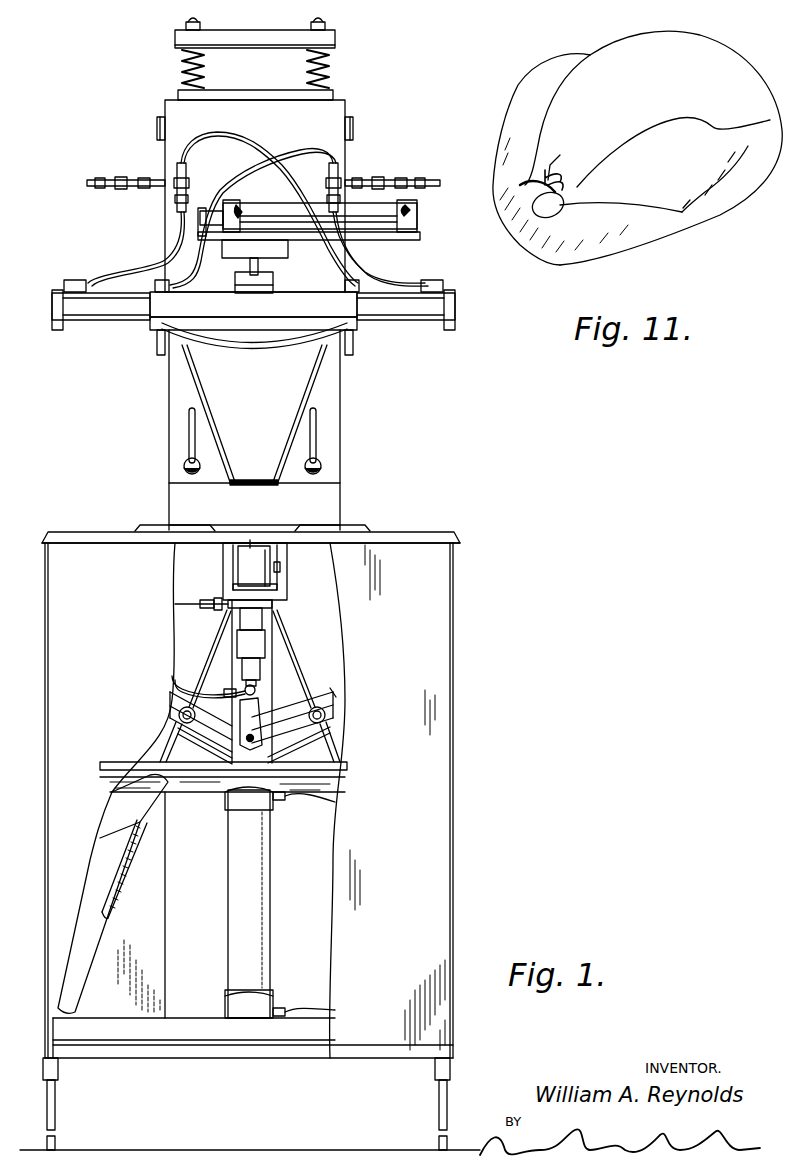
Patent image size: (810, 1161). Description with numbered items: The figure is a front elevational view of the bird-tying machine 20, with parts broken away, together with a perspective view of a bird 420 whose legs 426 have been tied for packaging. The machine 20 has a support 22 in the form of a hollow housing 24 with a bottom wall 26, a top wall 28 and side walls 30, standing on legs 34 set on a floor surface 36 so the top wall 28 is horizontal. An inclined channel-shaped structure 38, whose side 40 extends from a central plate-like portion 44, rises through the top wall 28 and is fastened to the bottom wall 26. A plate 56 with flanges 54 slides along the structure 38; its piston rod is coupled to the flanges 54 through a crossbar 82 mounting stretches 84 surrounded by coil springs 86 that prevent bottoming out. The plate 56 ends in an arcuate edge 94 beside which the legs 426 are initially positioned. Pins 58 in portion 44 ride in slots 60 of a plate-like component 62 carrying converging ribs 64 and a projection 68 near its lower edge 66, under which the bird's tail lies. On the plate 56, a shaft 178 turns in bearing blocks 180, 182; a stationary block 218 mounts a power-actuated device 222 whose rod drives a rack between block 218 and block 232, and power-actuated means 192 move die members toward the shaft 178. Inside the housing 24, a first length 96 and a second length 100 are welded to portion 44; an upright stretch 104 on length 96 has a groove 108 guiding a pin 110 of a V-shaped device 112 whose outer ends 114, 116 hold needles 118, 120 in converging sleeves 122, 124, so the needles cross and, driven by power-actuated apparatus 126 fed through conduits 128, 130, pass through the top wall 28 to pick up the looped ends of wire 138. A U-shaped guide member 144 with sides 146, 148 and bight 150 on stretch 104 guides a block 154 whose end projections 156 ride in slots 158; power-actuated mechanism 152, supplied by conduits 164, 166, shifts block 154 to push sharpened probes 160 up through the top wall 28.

In FIG. 1, the machine 20 is at (471, 557).
In FIG. 1, the support 22 is at (455, 822).
In FIG. 1, the hollow housing 24 is at (444, 722).
In FIG. 1, the bottom wall 26 is at (232, 1058).
In FIG. 1, the top wall 28 is at (428, 532).
In FIG. 1, the side walls 30 is at (455, 760).
In FIG. 1, the legs 34 is at (57, 1105).
In FIG. 1, the surface 36 is at (150, 1150).
In FIG. 1, the channel-shaped structure 38 is at (343, 492).
In FIG. 1, the side 40 is at (336, 94).
In FIG. 1, the central plate-like portion 44 is at (320, 520).
In FIG. 1, the flanges 54 is at (346, 108).
In FIG. 1, the elongated plate 56 is at (340, 150).
In FIG. 1, the pins 58 is at (182, 466).
In FIG. 1, the elongated slots 60 is at (186, 422).
In FIG. 1, the plate-like component 62 is at (341, 393).
In FIG. 1, the ribs 64 is at (200, 376).
In FIG. 1, the lower edge 66 is at (285, 483).
In FIG. 1, the projection 68 is at (250, 478).
In FIG. 1, the crossbar 82 is at (278, 30).
In FIG. 1, the elongated stretches 84 is at (185, 24).
In FIG. 1, the coil springs 86 is at (182, 66).
In FIG. 1, the arcuate edge 94 is at (212, 330).
In FIG. 1, the first length 96 is at (200, 780).
In FIG. 1, the second length 100 is at (182, 1015).
In FIG. 1, the upright stretch 104 is at (272, 680).
In FIG. 1, the elongated groove 108 is at (264, 712).
In FIG. 1, the pin 110 is at (262, 742).
In FIG. 1, the V-shaped device 112 is at (328, 697).
In FIG. 1, the outer end 114 is at (340, 722).
In FIG. 1, the outer end 116 is at (172, 705).
In FIG. 1, the needle 118 is at (285, 648).
In FIG. 1, the needle 120 is at (212, 650).
In FIG. 1, the sleeve 122 is at (345, 745).
In FIG. 1, the sleeve 124 is at (150, 740).
In FIG. 1, the power-actuated apparatus 126 is at (262, 878).
In FIG. 1, the conduit 128 is at (340, 805).
In FIG. 1, the conduit 130 is at (310, 1012).
In FIG. 11, the U-shaped wire 138 is at (548, 178).
In FIG. 1, the U-shaped guide member 144 is at (222, 583).
In FIG. 1, the side 146 is at (285, 553).
In FIG. 1, the side 148 is at (227, 556).
In FIG. 1, the bight portion 150 is at (272, 604).
In FIG. 1, the power-actuated mechanism 152 is at (263, 622).
In FIG. 1, the block 154 is at (255, 584).
In FIG. 1, the end projections 156 is at (280, 587).
In FIG. 1, the slots 158 is at (280, 567).
In FIG. 1, the sharpened probes 160 is at (250, 540).
In FIG. 1, the conduit 164 is at (175, 602).
In FIG. 1, the conduit 166 is at (170, 668).
In FIG. 1, the shaft 178 is at (250, 268).
In FIG. 1, the bearing block 180 is at (272, 280).
In FIG. 1, the bearing block 182 is at (285, 252).
In FIG. 1, the power-actuated means 192 is at (100, 322).
In FIG. 1, the stationary block 218 is at (234, 205).
In FIG. 1, the power-actuated device 222 is at (250, 212).
In FIG. 1, the block 232 is at (417, 228).
In FIG. 11, the bird 420 is at (712, 42).
In FIG. 11, the legs 426 is at (535, 85).